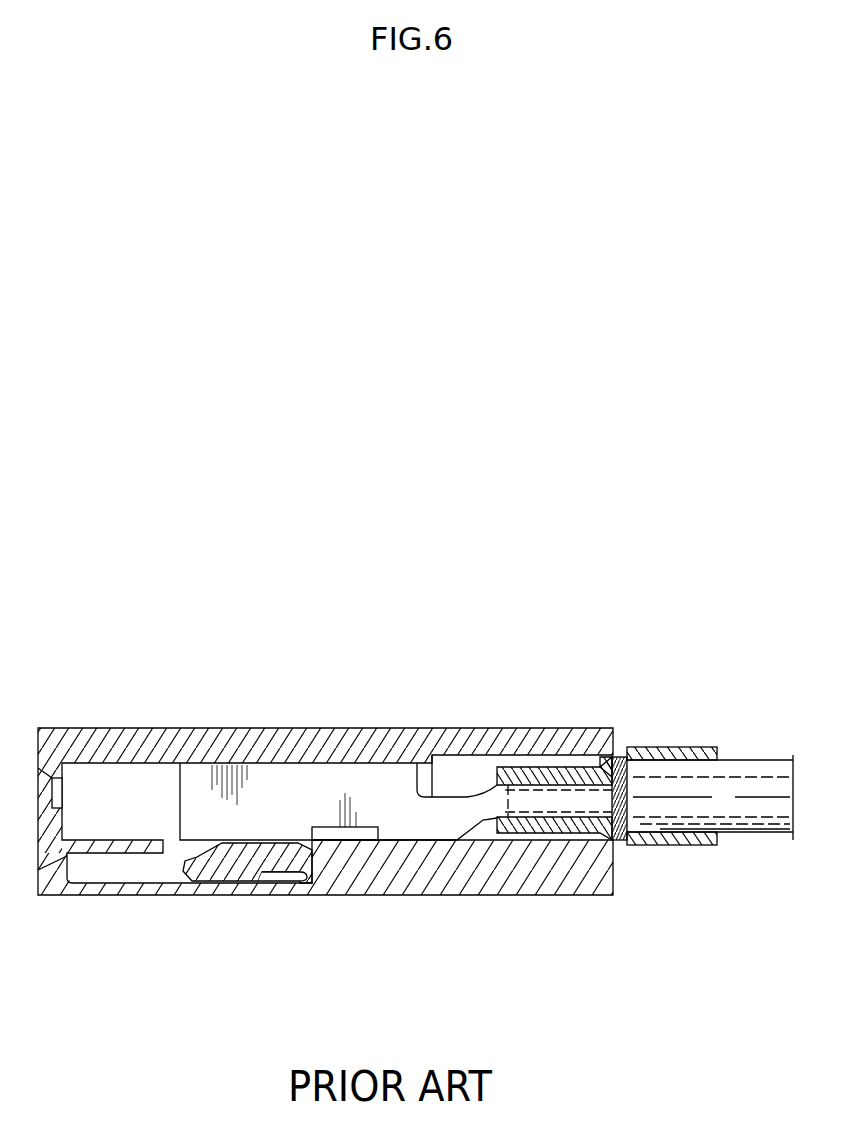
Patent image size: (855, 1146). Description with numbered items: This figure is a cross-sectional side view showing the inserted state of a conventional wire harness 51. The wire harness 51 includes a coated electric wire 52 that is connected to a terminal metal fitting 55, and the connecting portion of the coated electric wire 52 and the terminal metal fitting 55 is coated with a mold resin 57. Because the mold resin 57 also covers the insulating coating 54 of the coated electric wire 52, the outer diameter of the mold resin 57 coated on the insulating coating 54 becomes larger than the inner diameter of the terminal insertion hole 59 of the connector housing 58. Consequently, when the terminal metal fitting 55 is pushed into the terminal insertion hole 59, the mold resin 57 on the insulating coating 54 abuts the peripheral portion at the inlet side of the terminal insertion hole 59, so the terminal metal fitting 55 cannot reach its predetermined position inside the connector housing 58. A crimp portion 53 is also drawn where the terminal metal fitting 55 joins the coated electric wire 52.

The wire harness 51 is at (661, 766).
The coated electric wire 52 is at (768, 757).
The crimp portion 53 is at (622, 840).
The insulating coating 54 is at (738, 760).
The terminal metal fitting 55 is at (290, 762).
The mold resin 57 is at (672, 747).
The connector housing 58 is at (170, 727).
The terminal insertion hole 59 is at (621, 747).